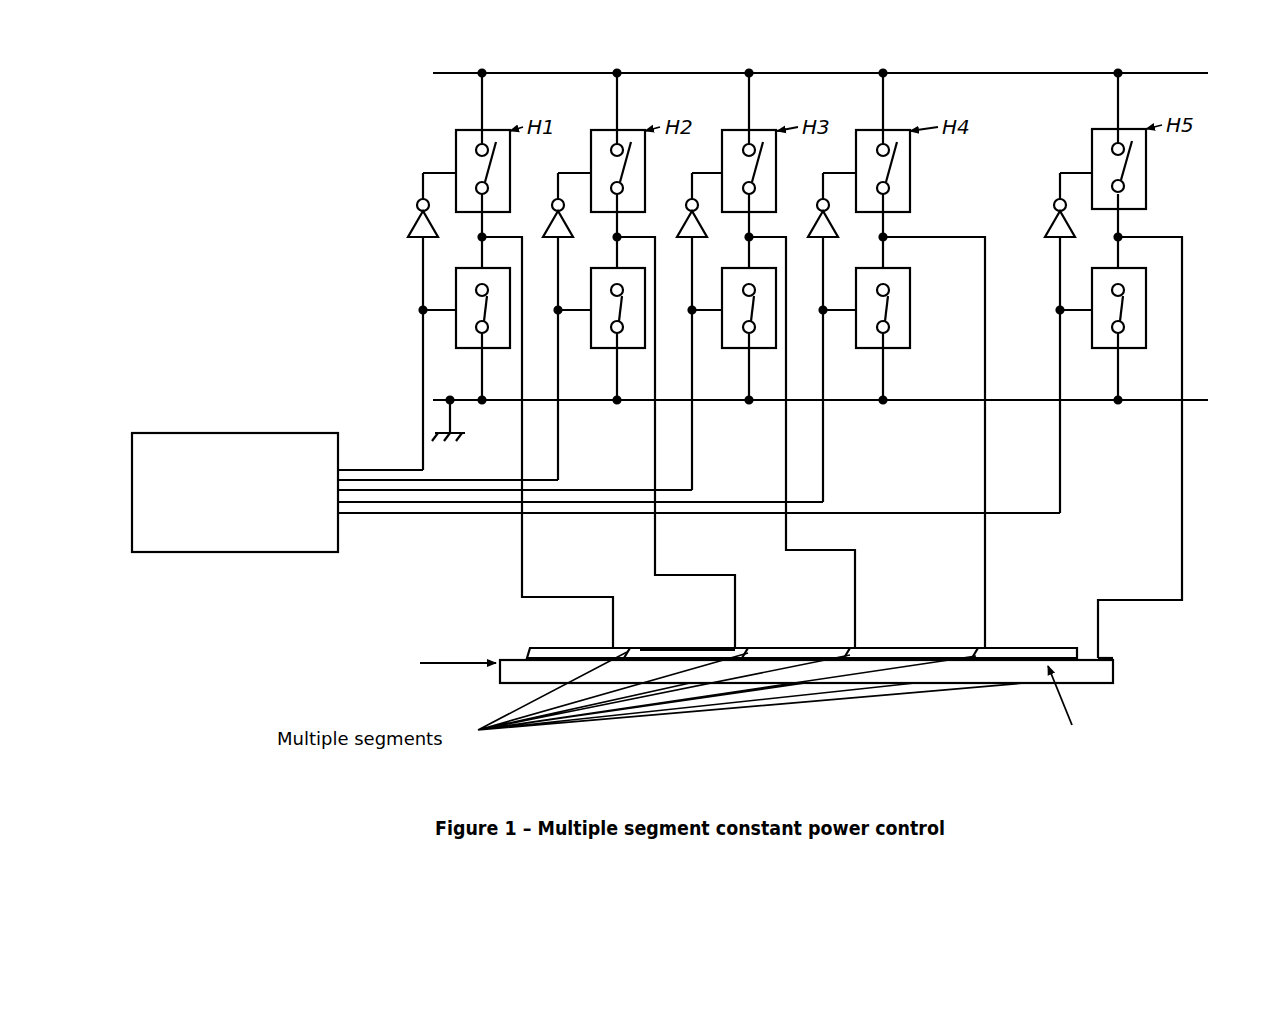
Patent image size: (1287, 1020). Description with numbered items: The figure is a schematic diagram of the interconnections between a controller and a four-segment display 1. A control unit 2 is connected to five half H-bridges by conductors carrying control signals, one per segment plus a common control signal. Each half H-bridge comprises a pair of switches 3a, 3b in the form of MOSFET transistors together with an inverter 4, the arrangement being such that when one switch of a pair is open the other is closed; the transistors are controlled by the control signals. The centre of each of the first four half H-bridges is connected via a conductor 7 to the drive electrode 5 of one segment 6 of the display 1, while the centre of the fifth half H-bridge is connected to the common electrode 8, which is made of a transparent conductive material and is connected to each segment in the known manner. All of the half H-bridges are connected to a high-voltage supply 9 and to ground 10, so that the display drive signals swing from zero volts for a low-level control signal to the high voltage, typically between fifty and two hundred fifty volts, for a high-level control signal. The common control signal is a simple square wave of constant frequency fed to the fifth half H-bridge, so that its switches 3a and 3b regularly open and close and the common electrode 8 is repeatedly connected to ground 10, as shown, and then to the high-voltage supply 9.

The display 1 is at (913, 684).
The control unit 2 is at (224, 510).
The switch 3a is at (453, 141).
The switch 3b is at (453, 281).
The inverter 4 is at (412, 228).
The drive electrode 5 is at (608, 647).
The segment 6 is at (650, 646).
The conductor 7 is at (518, 558).
The common electrode 8 is at (1149, 715).
The high-voltage supply 9 is at (704, 70).
The ground 10 is at (939, 404).